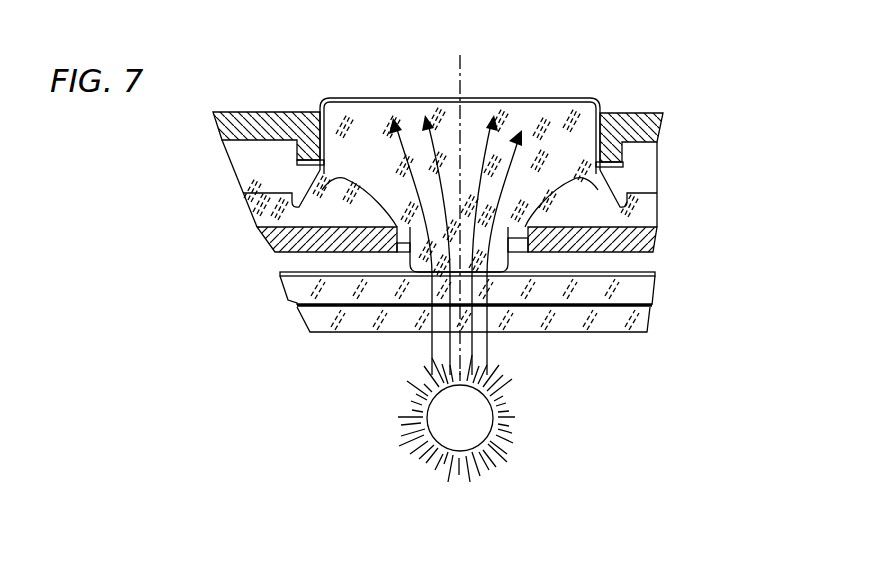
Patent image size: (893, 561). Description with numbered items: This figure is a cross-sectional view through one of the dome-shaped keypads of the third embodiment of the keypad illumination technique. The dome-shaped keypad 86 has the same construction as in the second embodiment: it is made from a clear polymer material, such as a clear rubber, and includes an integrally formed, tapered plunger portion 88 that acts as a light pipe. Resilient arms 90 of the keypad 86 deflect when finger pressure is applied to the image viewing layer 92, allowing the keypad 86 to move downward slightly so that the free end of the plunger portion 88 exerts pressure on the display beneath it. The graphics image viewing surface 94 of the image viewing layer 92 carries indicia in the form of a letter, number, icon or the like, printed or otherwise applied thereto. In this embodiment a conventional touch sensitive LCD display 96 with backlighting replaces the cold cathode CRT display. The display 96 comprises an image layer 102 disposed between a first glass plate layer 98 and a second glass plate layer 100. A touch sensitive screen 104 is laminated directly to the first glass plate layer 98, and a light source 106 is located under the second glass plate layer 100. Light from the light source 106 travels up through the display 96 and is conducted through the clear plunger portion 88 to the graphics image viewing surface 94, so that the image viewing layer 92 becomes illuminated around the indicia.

The keypad 86 is at (568, 118).
The plunger portion 88 is at (520, 205).
The arms 90 is at (603, 193).
The image viewing layer 92 is at (597, 100).
The graphics image viewing surface 94 is at (538, 100).
The touch sensitive LCD display 96 is at (514, 306).
The first glass plate layer 98 is at (655, 290).
The second glass plate layer 100 is at (647, 325).
The image layer 102 is at (652, 308).
The touch sensitive screen 104 is at (655, 277).
The light source 106 is at (492, 428).